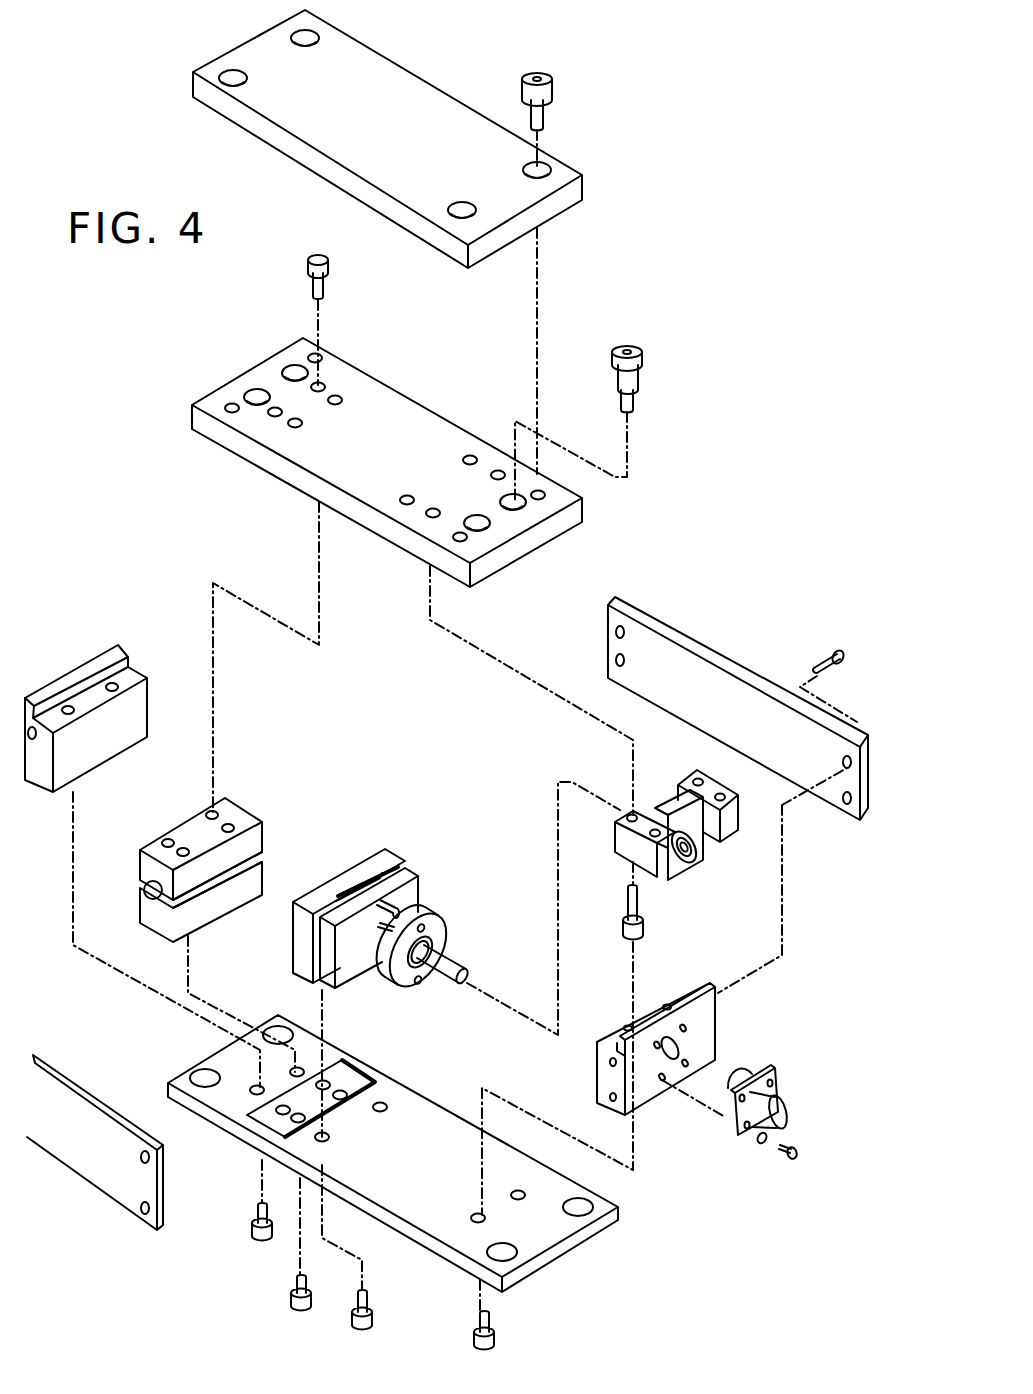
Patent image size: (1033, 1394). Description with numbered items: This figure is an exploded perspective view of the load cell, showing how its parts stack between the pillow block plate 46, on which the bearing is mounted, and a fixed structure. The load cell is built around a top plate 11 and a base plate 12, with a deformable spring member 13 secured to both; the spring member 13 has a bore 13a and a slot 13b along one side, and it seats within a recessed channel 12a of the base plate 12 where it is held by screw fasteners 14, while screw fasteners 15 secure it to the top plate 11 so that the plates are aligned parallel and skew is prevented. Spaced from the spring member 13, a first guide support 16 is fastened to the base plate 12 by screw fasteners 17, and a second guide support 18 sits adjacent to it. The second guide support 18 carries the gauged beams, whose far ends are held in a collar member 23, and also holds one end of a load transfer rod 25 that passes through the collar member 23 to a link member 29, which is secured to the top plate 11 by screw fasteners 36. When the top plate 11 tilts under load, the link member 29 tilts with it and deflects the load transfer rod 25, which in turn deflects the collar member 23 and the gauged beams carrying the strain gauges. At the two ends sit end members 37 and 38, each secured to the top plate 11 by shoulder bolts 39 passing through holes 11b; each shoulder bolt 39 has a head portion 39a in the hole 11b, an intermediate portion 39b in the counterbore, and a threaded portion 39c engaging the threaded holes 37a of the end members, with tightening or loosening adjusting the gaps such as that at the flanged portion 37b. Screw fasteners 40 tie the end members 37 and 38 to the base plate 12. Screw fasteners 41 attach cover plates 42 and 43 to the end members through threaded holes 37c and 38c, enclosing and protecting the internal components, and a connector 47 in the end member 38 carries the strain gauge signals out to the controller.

The top plate 11 is at (397, 392).
The holes 11b is at (257, 392).
The base plate 12 is at (597, 1235).
The recessed area or channel 12a is at (355, 1068).
The deformable spring member 13 is at (208, 923).
The bore 13a is at (152, 897).
The slot 13b is at (252, 860).
The screw fasteners 14 is at (293, 1307).
The screw fasteners 15 is at (323, 268).
The first guide support 16 is at (395, 853).
The screw fasteners 17 is at (375, 1320).
The second guide support 18 is at (418, 870).
The collar member 23 is at (443, 928).
The load transfer rod 25 is at (458, 967).
The link member 29 is at (701, 879).
The screw fasteners 36 is at (637, 907).
The end member 37 is at (133, 854).
The threaded holes 37a is at (115, 688).
The flanged portion 37b is at (128, 660).
The threaded holes 37c is at (32, 738).
The end member 38 is at (654, 1050).
The threaded holes 38c is at (612, 1095).
The shoulder bolts 39 is at (614, 410).
The head portion 39a is at (638, 365).
The intermediate portion 39b is at (630, 382).
The threaded portion 39c is at (633, 407).
The screw fasteners 40 is at (523, 1322).
The screw fasteners 41 is at (818, 670).
The cover plate 42 is at (112, 1202).
The cover plate 43 is at (687, 638).
The pillow block plate 46 is at (420, 78).
The connector 47 is at (735, 1128).